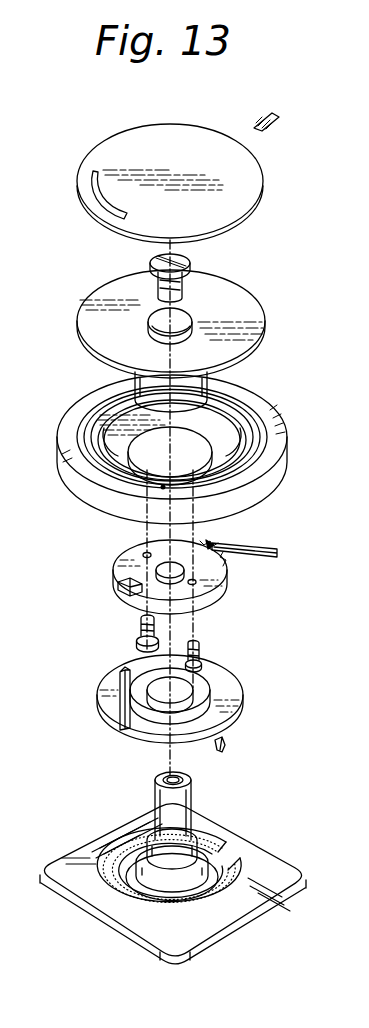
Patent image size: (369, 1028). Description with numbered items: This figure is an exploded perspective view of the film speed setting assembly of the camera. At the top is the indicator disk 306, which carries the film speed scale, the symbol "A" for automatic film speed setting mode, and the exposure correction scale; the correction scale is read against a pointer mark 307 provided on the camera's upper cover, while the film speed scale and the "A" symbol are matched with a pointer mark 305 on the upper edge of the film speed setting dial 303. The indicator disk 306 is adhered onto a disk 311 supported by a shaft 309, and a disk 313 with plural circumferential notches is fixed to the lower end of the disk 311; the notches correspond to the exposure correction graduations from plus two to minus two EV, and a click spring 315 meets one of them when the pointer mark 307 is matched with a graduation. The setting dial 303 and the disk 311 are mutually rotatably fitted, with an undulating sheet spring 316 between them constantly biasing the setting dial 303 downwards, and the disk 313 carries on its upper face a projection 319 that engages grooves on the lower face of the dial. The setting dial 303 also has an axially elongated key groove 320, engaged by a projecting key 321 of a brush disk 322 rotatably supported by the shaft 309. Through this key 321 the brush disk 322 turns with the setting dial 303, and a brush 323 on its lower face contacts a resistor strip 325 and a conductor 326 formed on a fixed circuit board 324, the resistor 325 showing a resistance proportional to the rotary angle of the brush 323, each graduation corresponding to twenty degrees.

The film speed setting dial 303 is at (287, 450).
The pointer mark 305 is at (163, 487).
The indicator disk 306 is at (262, 200).
The pointer mark 307 is at (280, 118).
The shaft 309 is at (177, 803).
The disk 311 is at (262, 312).
The disk with plural circumferential notches 313 is at (127, 555).
The click spring 315 is at (277, 548).
The undulating sheet spring 316 is at (97, 403).
The projection 319 is at (118, 582).
The key groove 320 is at (355, 395).
The projecting key 321 is at (120, 693).
The brush disk 322 is at (230, 690).
The brush 323 is at (225, 738).
The fixed circuit board 324 is at (293, 867).
The resistor strip 325 is at (110, 857).
The conductor 326 is at (172, 893).